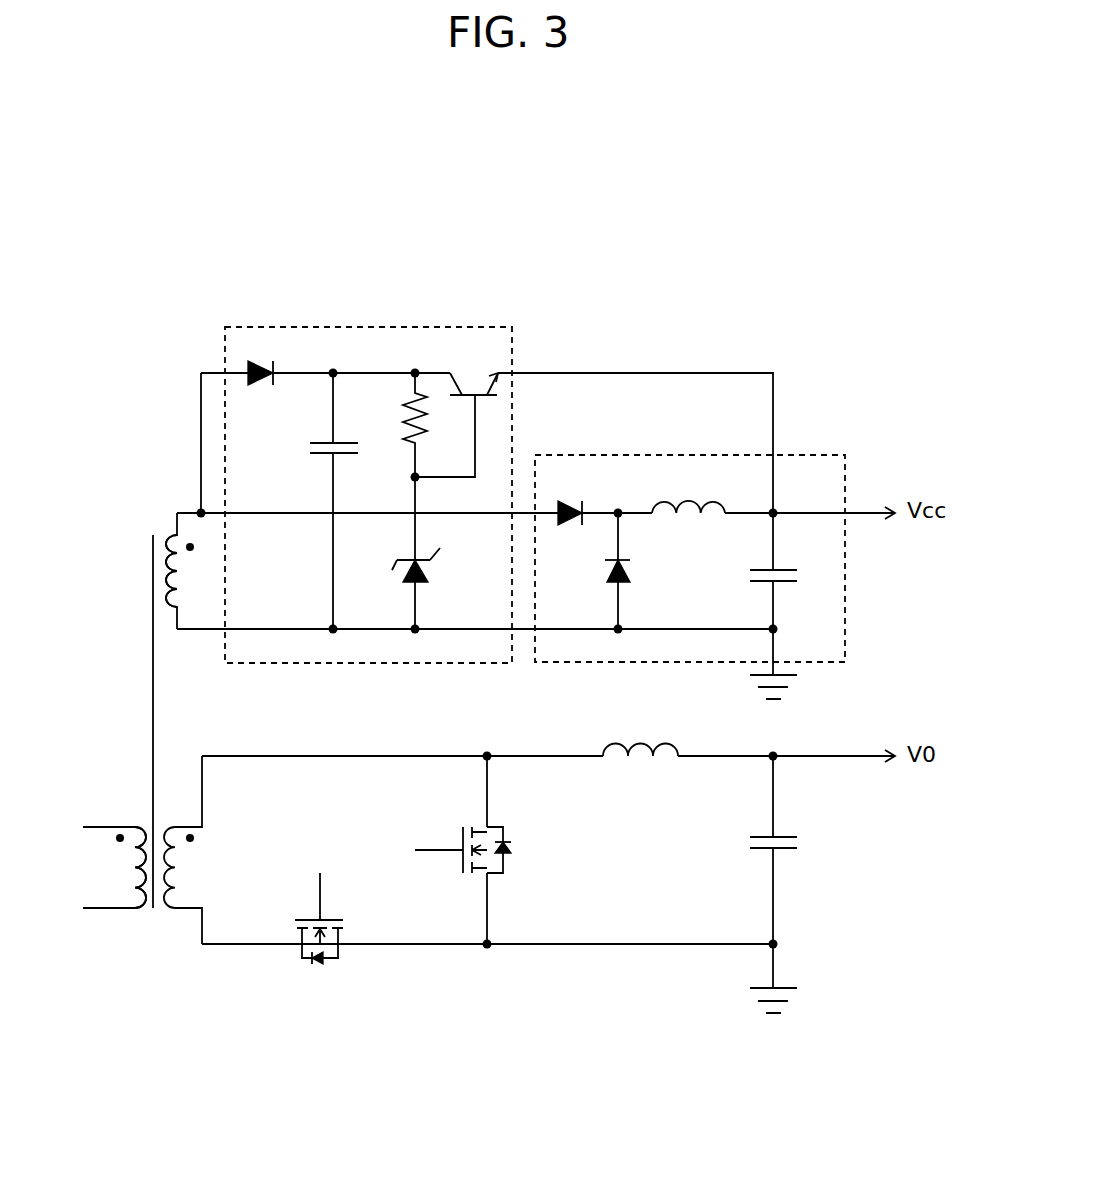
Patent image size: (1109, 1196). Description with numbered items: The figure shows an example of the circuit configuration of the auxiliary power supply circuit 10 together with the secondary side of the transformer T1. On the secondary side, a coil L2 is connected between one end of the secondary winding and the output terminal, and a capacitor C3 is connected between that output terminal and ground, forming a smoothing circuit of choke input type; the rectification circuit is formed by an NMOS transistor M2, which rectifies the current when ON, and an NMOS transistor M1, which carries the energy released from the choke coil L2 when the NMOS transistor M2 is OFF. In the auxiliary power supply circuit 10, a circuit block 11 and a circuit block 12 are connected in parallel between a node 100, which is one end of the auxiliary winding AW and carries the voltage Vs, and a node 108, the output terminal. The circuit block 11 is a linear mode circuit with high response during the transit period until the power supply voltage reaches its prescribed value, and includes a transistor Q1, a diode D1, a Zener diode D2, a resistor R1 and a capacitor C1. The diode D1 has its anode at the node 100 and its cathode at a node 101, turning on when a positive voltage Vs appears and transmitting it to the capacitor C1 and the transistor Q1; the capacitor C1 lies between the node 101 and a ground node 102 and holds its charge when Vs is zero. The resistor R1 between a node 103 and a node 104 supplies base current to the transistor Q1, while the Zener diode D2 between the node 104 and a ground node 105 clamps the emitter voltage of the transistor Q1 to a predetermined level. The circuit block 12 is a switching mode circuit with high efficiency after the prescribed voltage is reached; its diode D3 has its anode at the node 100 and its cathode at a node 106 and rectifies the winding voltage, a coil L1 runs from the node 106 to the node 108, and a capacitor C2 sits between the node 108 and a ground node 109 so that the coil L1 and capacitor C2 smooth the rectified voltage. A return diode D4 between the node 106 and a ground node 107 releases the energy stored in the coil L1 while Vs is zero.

The auxiliary power supply circuit 10 is at (574, 318).
The circuit block 11 is at (368, 326).
The circuit block 12 is at (808, 455).
The node 100 is at (203, 515).
The node 101 is at (333, 373).
The node 102 is at (337, 627).
The node 103 is at (415, 373).
The node 104 is at (415, 477).
The node 105 is at (419, 627).
The node 106 is at (618, 512).
The node 107 is at (617, 628).
The node 108 is at (773, 512).
The node 109 is at (777, 627).
The diode D1 is at (255, 383).
The capacitor C1 is at (310, 448).
The resistor R1 is at (403, 425).
The transistor Q1 is at (468, 382).
The Zener diode D2 is at (432, 570).
The diode D3 is at (566, 522).
The return diode D4 is at (630, 570).
The coil L1 is at (700, 520).
The capacitor C2 is at (748, 583).
The auxiliary winding AW is at (168, 612).
The transformer T1 is at (140, 822).
The NMOS transistor M1 is at (497, 827).
The NMOS transistor M2 is at (293, 947).
The coil L2 is at (637, 757).
The capacitor C3 is at (800, 843).
The voltage Vs is at (193, 496).